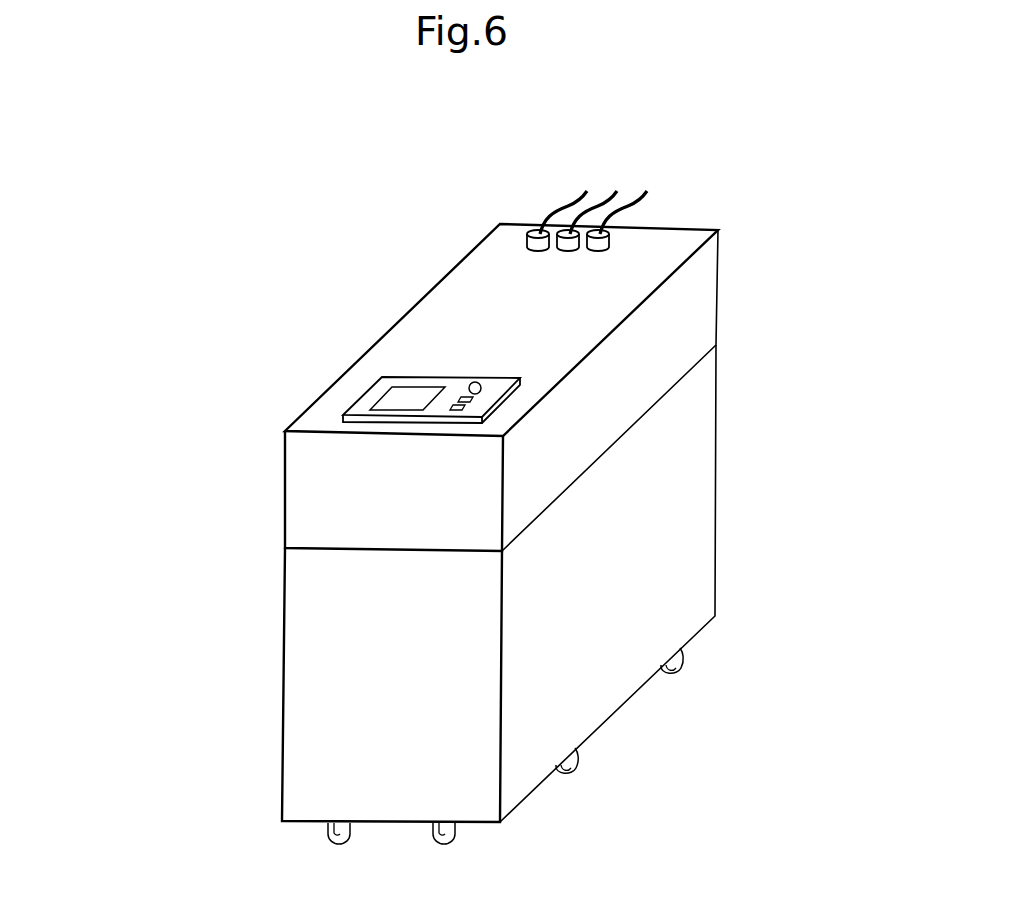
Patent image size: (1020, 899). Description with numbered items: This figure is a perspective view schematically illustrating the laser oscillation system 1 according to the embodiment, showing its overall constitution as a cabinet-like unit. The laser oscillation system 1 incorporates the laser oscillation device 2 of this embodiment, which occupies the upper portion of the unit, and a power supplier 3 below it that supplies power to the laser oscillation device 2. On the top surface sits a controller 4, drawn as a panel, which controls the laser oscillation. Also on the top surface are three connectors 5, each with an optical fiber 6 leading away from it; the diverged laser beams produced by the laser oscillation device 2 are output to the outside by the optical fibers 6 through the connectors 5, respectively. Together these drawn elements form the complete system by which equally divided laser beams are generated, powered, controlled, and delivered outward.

The laser oscillation system 1 is at (246, 173).
The laser oscillation device 2 is at (298, 504).
The power supplier 3 is at (297, 643).
The controller 4 is at (374, 382).
The connector 5 is at (610, 242).
The optical fiber 6 is at (647, 193).